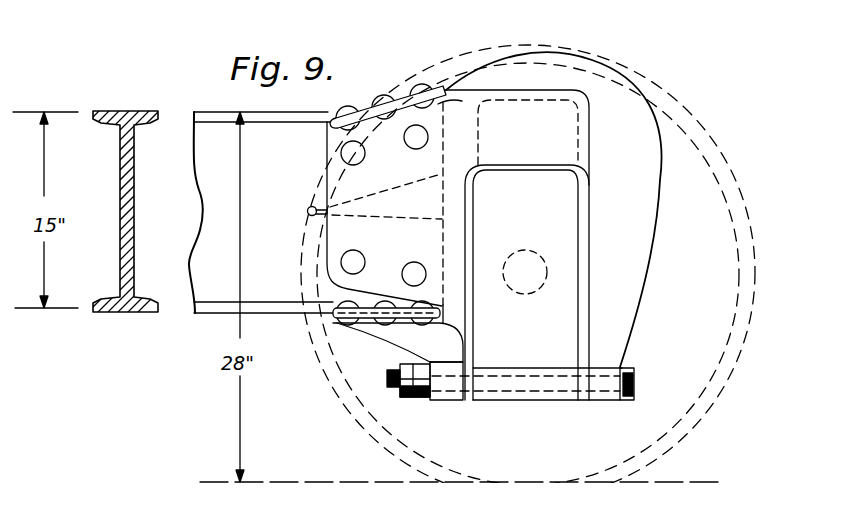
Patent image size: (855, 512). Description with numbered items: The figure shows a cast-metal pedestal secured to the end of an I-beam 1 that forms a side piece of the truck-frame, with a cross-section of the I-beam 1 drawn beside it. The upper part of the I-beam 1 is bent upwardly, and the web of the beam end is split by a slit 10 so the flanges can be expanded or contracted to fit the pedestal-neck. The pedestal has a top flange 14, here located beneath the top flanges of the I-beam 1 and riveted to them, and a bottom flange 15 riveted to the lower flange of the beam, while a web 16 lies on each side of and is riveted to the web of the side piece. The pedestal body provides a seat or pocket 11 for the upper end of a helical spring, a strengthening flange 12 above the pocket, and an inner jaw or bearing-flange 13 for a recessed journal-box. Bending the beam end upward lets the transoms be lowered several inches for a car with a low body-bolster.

The I-beam 1 is at (192, 223).
The slit 10 is at (317, 217).
The seat or pocket 11 is at (483, 245).
The strengthening flange 12 is at (528, 272).
The inner jaw or bearing-flange 13 is at (472, 244).
The top flange 14 is at (367, 117).
The bottom flange 15 is at (333, 318).
The web 16 is at (384, 214).